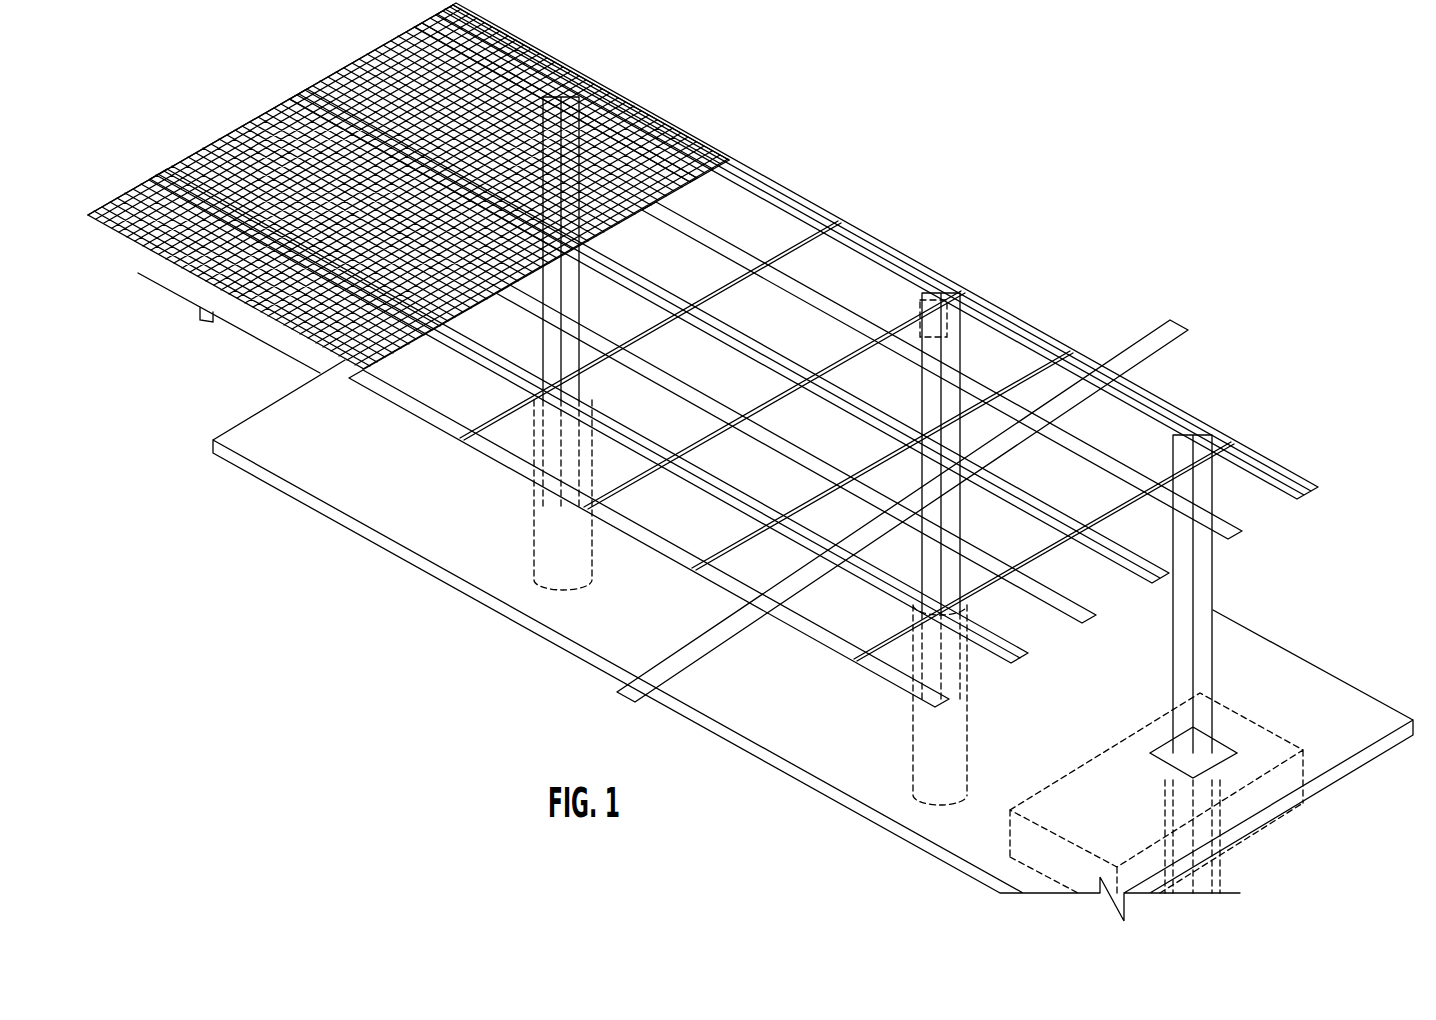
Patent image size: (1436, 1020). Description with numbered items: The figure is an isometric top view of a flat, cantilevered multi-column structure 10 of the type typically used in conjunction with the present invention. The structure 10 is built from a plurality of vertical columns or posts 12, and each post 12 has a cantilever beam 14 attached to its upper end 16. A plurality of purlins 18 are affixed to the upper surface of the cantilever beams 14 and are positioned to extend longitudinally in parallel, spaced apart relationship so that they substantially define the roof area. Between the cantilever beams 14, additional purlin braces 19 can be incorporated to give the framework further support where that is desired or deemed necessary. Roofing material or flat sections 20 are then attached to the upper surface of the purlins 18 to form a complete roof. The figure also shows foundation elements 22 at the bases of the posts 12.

The flat, cantilevered multi-column structure 10 is at (462, 709).
The vertical column or post 12 is at (573, 302).
The cantilever beam 14 is at (848, 358).
The upper end 16 is at (586, 80).
The purlin 18 is at (1075, 625).
The purlin brace 19 is at (724, 291).
The roofing material or flat section 20 is at (670, 127).
The footing 22 is at (553, 507).